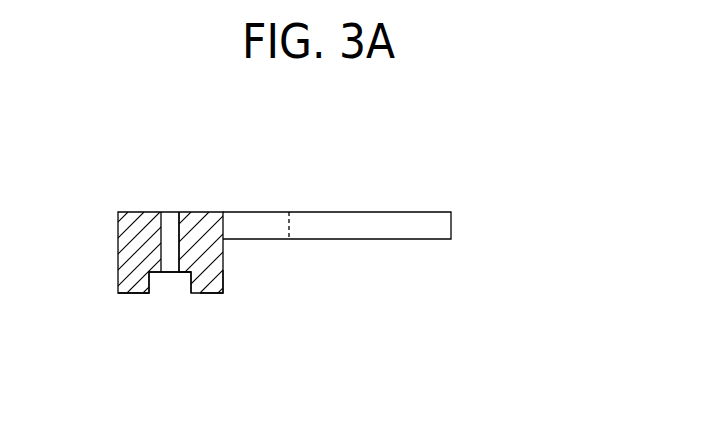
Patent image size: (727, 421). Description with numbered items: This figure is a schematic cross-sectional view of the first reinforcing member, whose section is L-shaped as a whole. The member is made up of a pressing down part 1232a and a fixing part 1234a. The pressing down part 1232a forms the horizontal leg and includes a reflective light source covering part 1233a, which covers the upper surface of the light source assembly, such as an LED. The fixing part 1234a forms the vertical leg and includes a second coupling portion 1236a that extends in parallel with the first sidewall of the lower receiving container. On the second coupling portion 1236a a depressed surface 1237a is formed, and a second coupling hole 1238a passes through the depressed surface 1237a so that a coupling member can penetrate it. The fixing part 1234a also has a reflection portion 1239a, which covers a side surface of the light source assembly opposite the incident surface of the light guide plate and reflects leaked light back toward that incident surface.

The pressing down part 1232a is at (341, 212).
The reflective light source covering part 1233a is at (285, 240).
The fixing part 1234a is at (139, 212).
The second coupling portion 1236a is at (217, 356).
The depressed surface 1237a is at (180, 268).
The second coupling hole 1238a is at (168, 263).
The reflection portion 1239a is at (224, 290).